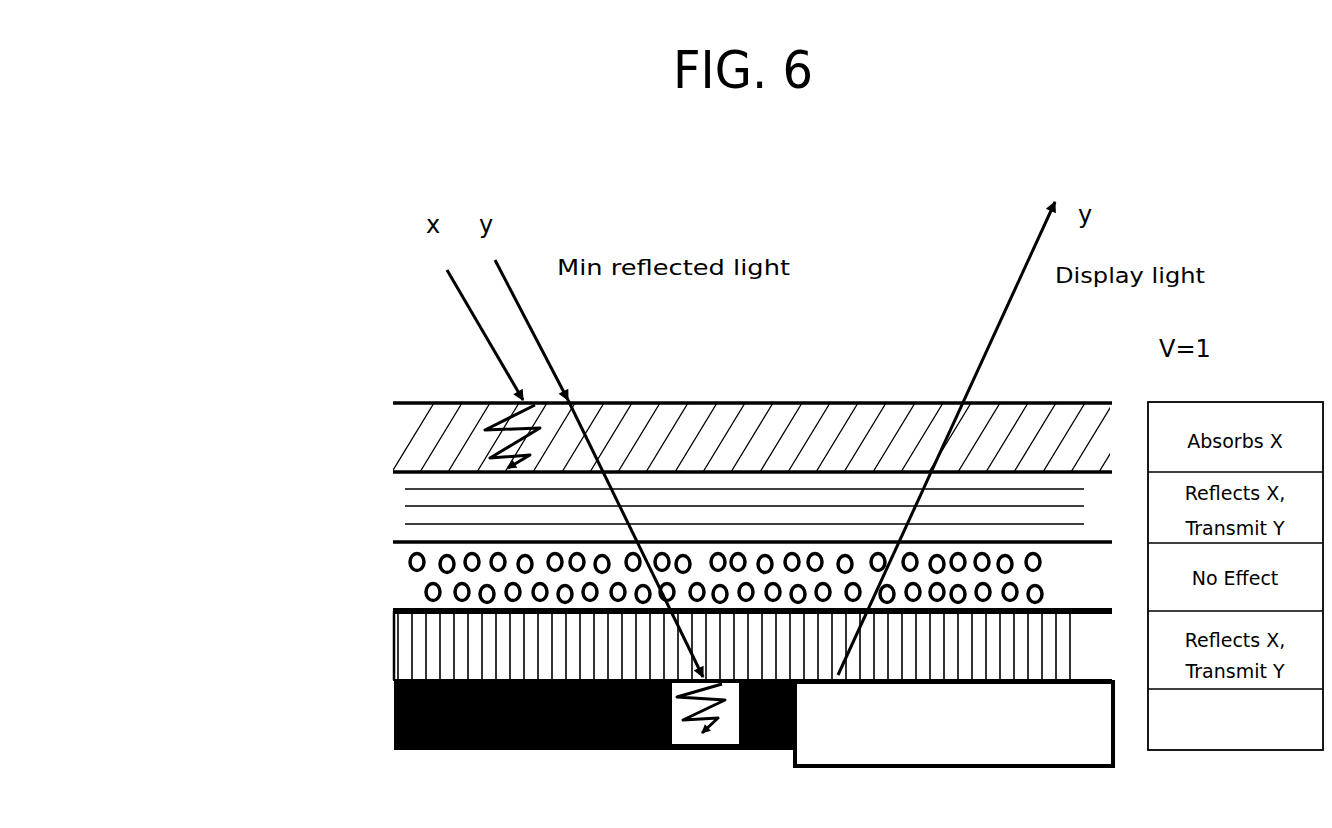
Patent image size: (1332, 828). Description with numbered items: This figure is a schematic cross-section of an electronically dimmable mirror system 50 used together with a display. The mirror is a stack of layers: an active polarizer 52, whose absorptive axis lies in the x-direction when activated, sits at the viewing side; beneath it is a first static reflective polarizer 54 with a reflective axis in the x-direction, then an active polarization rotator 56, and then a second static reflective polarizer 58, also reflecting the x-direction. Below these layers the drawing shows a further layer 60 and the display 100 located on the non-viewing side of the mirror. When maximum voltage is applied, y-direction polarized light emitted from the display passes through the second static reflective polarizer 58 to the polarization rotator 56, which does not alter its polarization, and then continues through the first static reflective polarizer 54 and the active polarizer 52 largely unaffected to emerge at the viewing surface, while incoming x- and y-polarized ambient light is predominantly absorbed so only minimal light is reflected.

The system 50 is at (295, 324).
The active polarizer 52 is at (385, 444).
The first static reflective polarizer 54 is at (385, 518).
The active polarization rotator 56 is at (383, 582).
The second static reflective polarizer 58 is at (383, 652).
The absorbing back layer 60 is at (383, 720).
The display 100 is at (1103, 767).